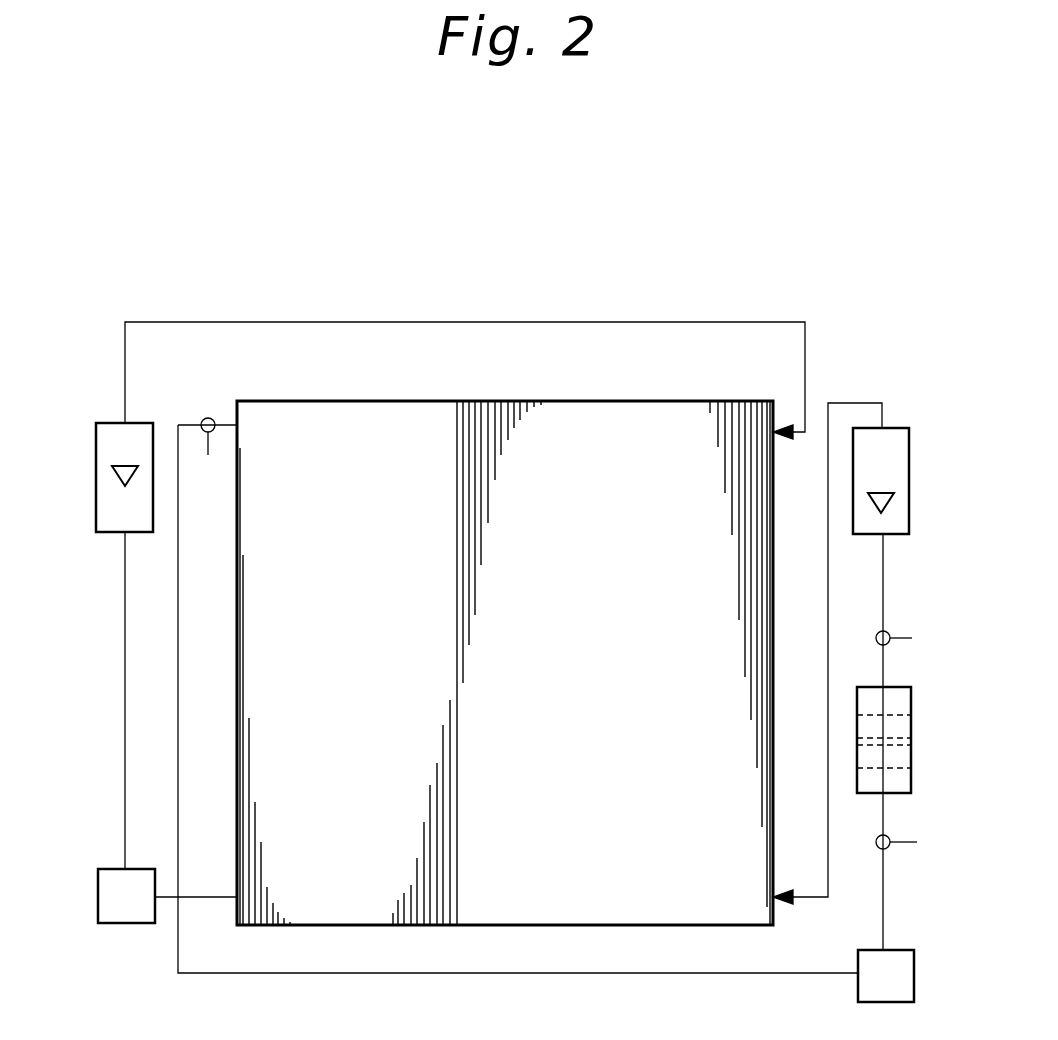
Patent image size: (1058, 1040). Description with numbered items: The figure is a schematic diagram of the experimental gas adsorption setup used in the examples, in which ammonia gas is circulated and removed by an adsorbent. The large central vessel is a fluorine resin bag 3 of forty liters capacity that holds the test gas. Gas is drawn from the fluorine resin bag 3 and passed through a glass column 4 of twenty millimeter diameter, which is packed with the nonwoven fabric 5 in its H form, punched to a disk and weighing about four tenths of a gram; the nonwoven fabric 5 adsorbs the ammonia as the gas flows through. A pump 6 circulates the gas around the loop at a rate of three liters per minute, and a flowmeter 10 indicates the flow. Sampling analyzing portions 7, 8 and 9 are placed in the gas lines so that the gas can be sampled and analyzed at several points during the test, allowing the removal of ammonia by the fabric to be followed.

The fluorine resin bag 3 is at (698, 424).
The glass column 4 is at (911, 698).
The nonwoven fabric 5 is at (911, 742).
The pump 6 is at (108, 869).
The sampling analyzing portion 7 is at (889, 847).
The sampling analyzing portion 8 is at (887, 632).
The sampling analyzing portion 9 is at (208, 418).
The flowmeter 10 is at (893, 428).